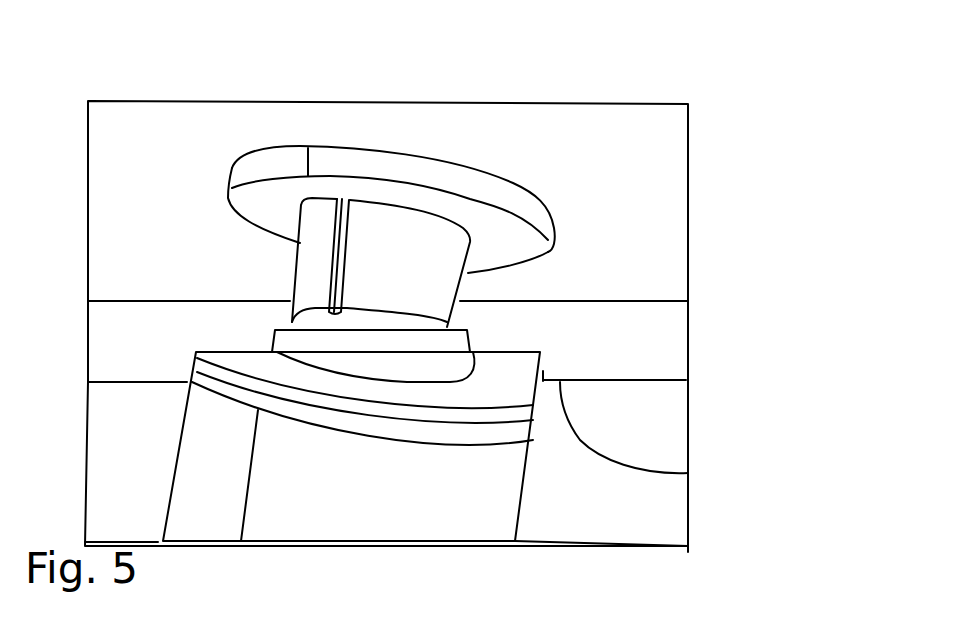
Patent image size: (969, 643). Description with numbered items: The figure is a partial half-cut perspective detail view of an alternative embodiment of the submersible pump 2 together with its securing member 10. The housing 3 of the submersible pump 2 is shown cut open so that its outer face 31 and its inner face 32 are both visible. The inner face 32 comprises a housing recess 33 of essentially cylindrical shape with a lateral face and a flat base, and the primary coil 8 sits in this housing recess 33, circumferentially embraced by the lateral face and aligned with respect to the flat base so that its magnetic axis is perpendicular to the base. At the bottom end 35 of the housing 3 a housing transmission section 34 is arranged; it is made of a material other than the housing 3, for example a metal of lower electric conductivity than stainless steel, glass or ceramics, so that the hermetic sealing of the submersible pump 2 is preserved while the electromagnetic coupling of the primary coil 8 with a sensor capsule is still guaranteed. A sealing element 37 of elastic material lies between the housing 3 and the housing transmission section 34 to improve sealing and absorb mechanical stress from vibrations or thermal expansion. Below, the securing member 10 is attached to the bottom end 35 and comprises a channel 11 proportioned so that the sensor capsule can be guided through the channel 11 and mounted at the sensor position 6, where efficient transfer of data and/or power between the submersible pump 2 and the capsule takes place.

The submersible pump 2 is at (205, 105).
The housing 3 is at (523, 334).
The sensor position 6 is at (543, 372).
The primary coil 8 is at (385, 242).
The securing member 10 is at (640, 538).
The channel 11 is at (387, 512).
The outer face 31 is at (621, 303).
The inner face 32 is at (617, 388).
The housing recess 33 is at (447, 320).
The housing transmission section 34 is at (303, 343).
The bottom end 35 is at (688, 473).
The sealing element 37 is at (290, 335).